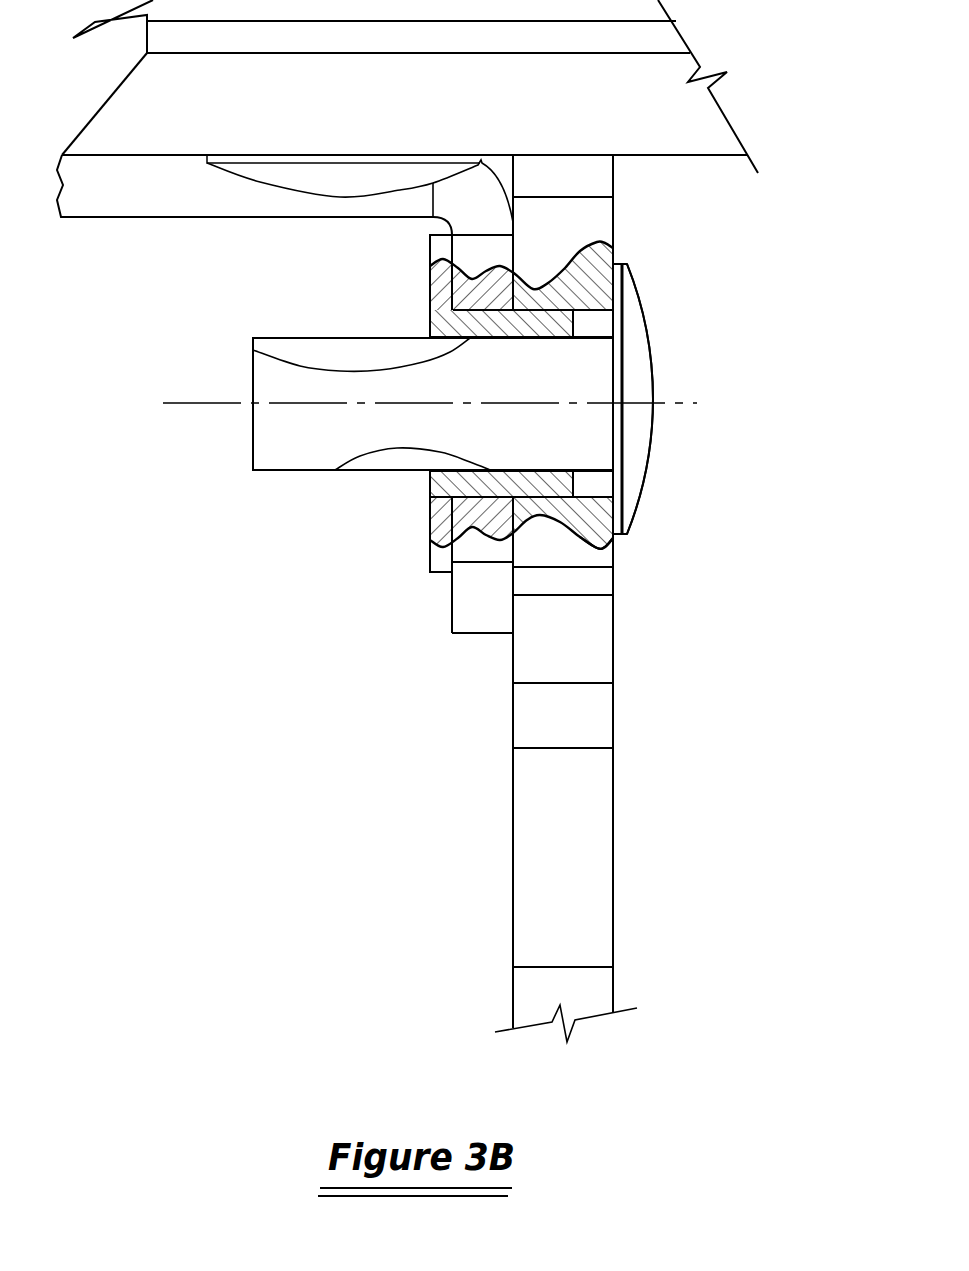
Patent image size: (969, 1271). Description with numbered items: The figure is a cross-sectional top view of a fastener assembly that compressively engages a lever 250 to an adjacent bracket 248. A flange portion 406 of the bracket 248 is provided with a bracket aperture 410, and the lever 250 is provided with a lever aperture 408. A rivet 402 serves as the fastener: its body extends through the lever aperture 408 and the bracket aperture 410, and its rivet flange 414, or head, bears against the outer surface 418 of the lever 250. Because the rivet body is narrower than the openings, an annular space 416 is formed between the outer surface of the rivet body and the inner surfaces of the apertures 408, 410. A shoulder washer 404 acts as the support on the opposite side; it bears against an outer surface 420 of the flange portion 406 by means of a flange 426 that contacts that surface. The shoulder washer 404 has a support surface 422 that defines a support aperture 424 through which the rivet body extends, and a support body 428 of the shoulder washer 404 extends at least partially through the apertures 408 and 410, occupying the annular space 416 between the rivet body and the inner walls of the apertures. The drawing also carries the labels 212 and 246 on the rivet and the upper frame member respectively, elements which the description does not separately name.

The bolt shank 212 is at (292, 445).
The upper frame member 246 is at (442, 133).
The frame plate 248 is at (157, 196).
The strut 250 is at (547, 636).
The bolt head 402 is at (653, 385).
The lower sealing member 404 is at (432, 507).
The lower block 406 is at (467, 601).
The lower seal end 408 is at (613, 543).
The upper sealing member 410 is at (440, 292).
The head curved face 414 is at (638, 450).
The flange 416 is at (603, 323).
The strut segment 418 is at (607, 580).
The lower cap 420 is at (449, 577).
The flange hatched section 422 is at (425, 333).
The lower ridge 424 is at (335, 470).
The upper cap 426 is at (428, 247).
The upper ridge 428 is at (253, 350).